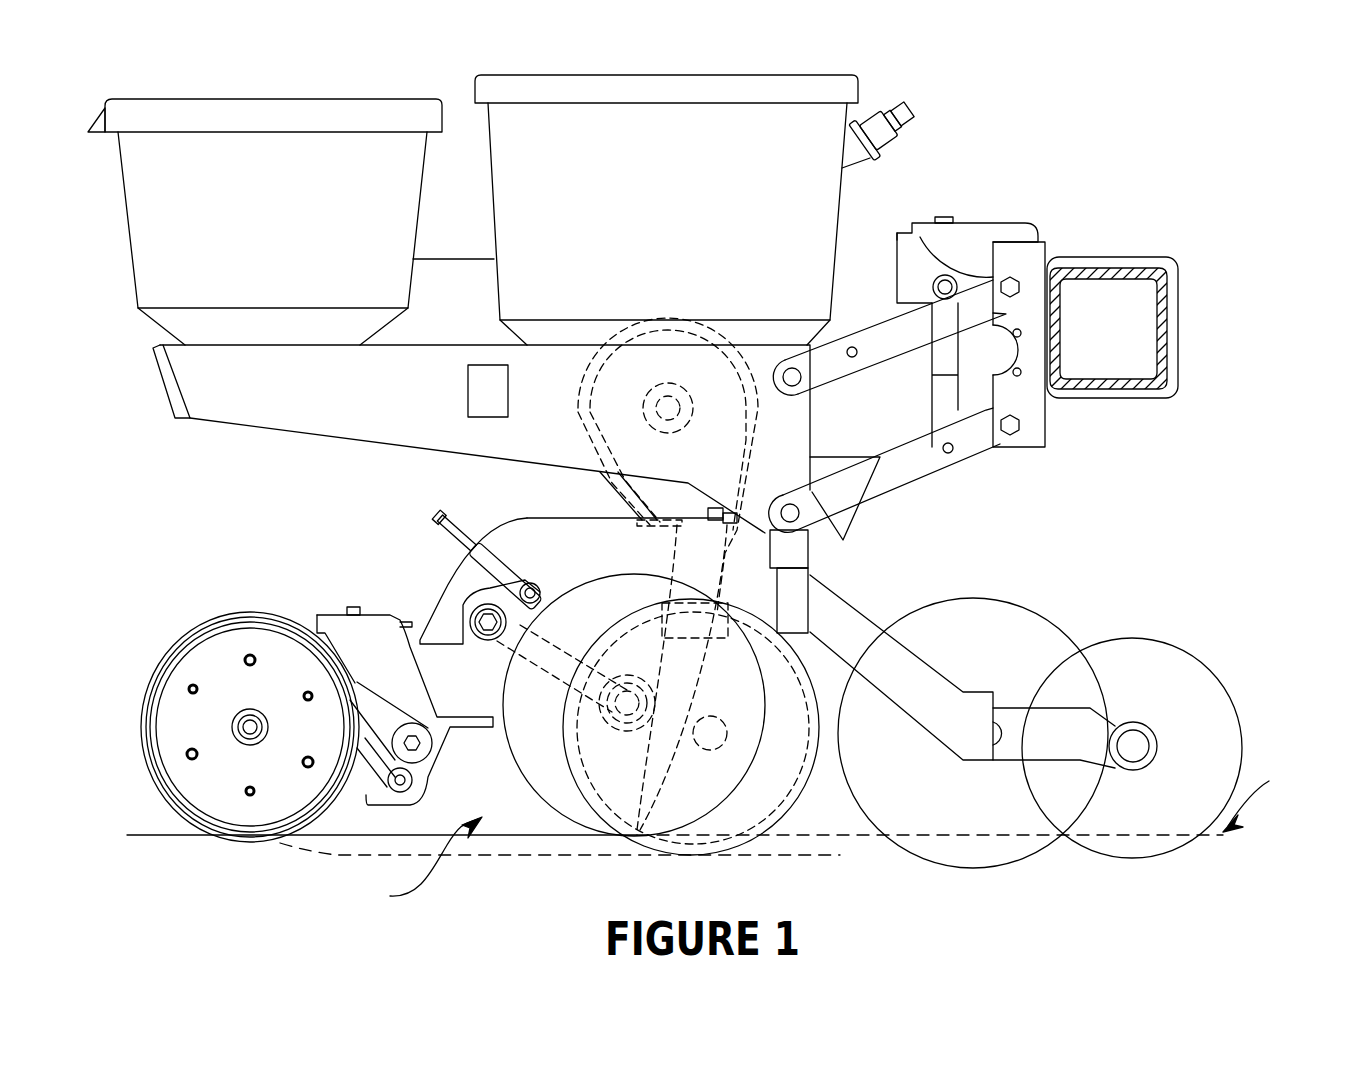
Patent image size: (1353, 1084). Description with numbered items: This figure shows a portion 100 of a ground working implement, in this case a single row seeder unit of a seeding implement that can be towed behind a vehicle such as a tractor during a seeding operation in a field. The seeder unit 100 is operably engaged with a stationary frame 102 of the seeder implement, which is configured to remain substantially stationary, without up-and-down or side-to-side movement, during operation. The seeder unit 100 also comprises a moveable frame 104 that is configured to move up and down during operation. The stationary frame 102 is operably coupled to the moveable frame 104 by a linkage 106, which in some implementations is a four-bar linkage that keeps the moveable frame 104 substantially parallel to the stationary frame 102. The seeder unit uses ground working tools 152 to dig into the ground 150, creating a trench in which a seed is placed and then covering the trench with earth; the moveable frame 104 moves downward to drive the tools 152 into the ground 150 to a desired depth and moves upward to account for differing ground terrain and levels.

The portion of the ground working implement 100 is at (1113, 133).
The stationary frame 102 is at (1160, 268).
The moveable frame 104 is at (827, 557).
The linkage 106 is at (962, 478).
The ground 150 is at (1269, 793).
The ground working tools 152 is at (411, 864).